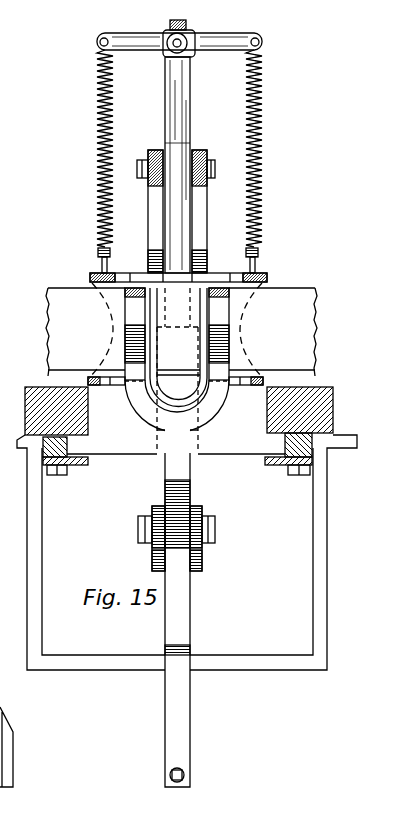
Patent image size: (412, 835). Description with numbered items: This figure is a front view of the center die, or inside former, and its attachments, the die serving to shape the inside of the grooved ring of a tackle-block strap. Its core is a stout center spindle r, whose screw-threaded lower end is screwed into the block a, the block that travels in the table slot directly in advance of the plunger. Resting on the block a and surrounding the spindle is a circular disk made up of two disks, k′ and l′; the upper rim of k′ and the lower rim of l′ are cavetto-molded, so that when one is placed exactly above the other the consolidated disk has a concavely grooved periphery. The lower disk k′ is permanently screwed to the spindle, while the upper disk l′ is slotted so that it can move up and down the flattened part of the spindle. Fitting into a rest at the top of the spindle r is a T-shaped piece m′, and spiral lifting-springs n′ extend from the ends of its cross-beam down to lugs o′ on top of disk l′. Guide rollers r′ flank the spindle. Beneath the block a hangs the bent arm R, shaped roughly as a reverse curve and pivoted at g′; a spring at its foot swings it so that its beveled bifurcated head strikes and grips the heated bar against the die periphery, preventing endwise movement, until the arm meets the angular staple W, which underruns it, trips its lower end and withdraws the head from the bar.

The T-shaped piece m′ is at (179, 146).
The spiral lifting-springs n′ is at (174, 161).
The guide rollers r′ is at (176, 203).
The center spindle r is at (175, 184).
The pin b′ is at (180, 146).
The lugs o′ is at (182, 266).
The upper disk l′ is at (88, 277).
The block a is at (181, 368).
The lower disk k′ is at (88, 381).
The hatched blocks A is at (179, 411).
The angular staple W is at (187, 552).
The bent arm R is at (177, 620).
The lower gear g′ is at (163, 484).